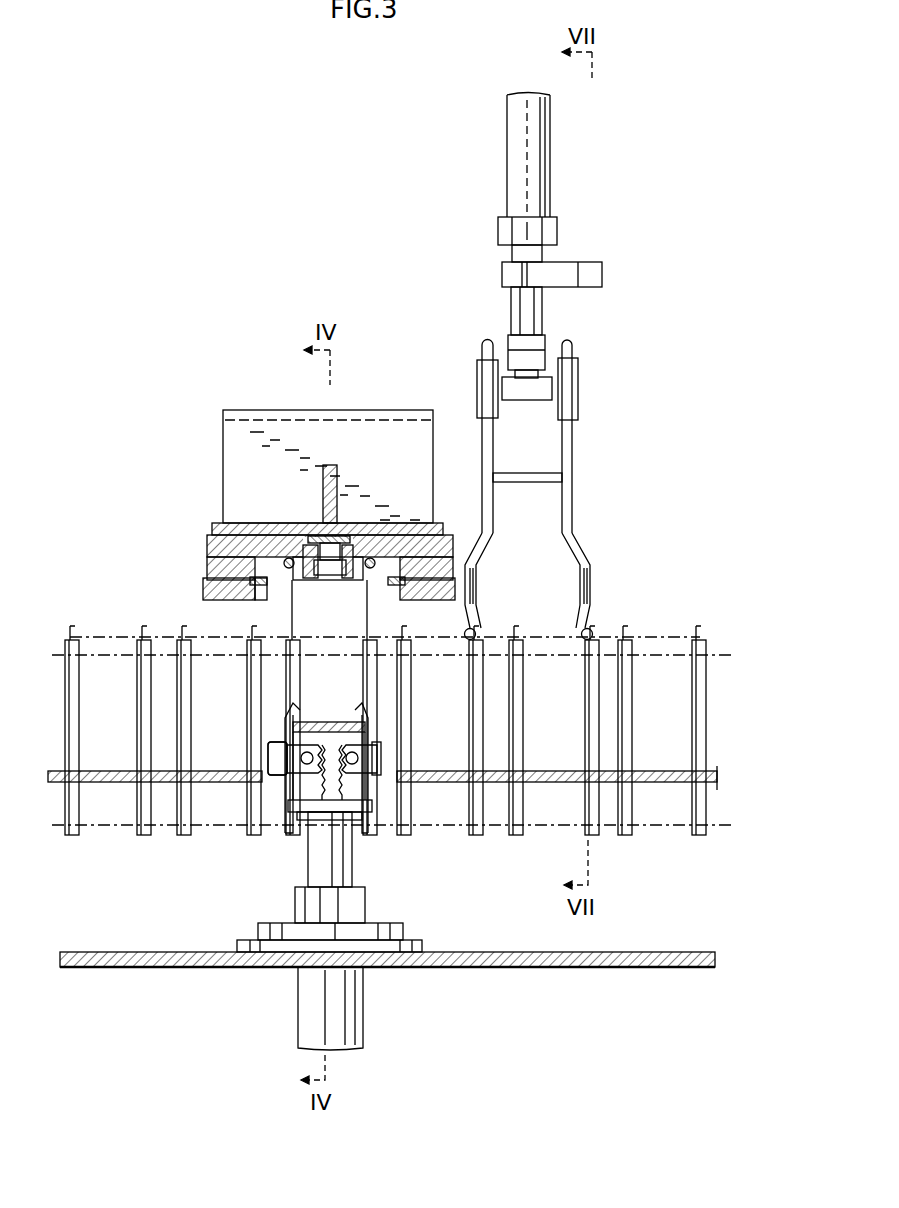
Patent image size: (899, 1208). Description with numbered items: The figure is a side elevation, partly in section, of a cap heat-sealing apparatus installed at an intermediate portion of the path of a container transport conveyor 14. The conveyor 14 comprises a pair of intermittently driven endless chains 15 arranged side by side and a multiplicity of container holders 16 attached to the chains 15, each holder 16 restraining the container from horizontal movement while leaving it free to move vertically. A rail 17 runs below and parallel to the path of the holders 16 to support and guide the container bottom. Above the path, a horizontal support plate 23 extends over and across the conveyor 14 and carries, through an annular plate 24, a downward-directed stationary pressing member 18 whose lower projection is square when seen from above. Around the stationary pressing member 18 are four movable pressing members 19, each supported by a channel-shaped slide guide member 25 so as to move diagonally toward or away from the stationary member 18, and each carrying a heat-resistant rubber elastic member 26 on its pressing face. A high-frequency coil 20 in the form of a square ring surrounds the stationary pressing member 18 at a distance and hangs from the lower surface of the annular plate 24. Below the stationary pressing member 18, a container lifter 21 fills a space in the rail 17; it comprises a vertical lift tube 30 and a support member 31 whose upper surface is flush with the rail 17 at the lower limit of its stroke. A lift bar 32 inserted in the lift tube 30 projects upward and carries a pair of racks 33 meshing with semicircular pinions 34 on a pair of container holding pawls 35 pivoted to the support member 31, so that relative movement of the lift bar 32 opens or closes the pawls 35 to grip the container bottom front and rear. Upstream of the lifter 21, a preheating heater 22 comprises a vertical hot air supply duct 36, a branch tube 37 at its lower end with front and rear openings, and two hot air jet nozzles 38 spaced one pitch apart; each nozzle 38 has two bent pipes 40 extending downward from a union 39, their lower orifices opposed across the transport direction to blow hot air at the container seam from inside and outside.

The container transport conveyor 14 is at (714, 637).
The endless chains 15 is at (660, 655).
The container holders 16 is at (622, 645).
The rail 17 is at (660, 782).
The stationary pressing member 18 is at (315, 577).
The movable pressing members 19 is at (208, 585).
The high-frequency coil 20 is at (288, 568).
The container lifter 21 is at (300, 876).
The preheating heater 22 is at (465, 268).
The horizontal support plate 23 is at (250, 530).
The annular plate 24 is at (242, 545).
The slide guide member 25 is at (215, 565).
The elastic member 26 is at (268, 588).
The vertical lift tube 30 is at (352, 870).
The support member 31 is at (365, 730).
The lift bar 32 is at (335, 785).
The racks 33 is at (318, 772).
The semicircular pinions 34 is at (318, 745).
The container holding pawls 35 is at (287, 713).
The vertical hot air supply duct 36 is at (517, 180).
The branch tube 37 is at (527, 400).
The hot air jet nozzles 38 is at (598, 615).
The union 39 is at (578, 388).
The bent pipes 40 is at (565, 513).